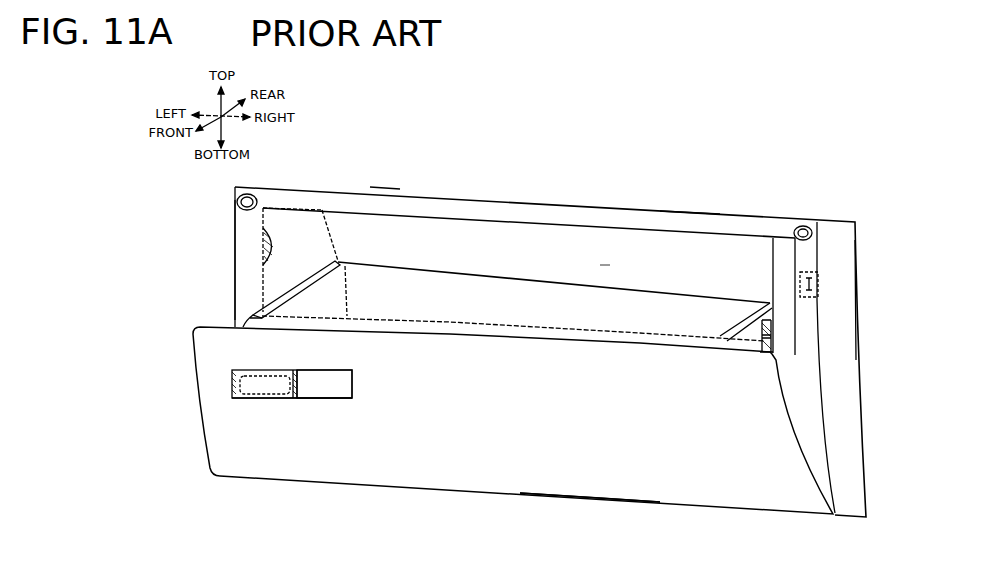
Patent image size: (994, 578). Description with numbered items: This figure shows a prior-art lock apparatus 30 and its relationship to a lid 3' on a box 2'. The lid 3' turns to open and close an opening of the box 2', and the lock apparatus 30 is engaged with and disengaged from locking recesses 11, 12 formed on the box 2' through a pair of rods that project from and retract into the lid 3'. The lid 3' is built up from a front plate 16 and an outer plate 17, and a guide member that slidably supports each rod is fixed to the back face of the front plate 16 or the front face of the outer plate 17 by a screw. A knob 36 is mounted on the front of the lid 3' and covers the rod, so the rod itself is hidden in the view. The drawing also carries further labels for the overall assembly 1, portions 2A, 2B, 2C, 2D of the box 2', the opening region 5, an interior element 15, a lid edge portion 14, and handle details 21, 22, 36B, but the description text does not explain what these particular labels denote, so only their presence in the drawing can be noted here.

The vehicle storage device 1 is at (754, 151).
The box 2' is at (563, 333).
The upper wall of housing 2A is at (440, 227).
The side wall of housing 2B is at (291, 221).
The front edge of upper wall 2C is at (687, 220).
The upper wall portion 2D is at (388, 225).
The lid 3' is at (513, 449).
The opening 5 is at (605, 258).
The locking recess 11 is at (263, 227).
The locking recess 12 is at (820, 283).
The lid edge portion 14 is at (550, 545).
The shelf 15 is at (456, 290).
The front plate 16 is at (560, 472).
The outer plate 17 is at (633, 341).
The knob 21 is at (262, 380).
The handle base 22 is at (336, 392).
The lock apparatus 30 is at (262, 405).
The knob 36 is at (238, 402).
The handle partition 36B is at (282, 391).